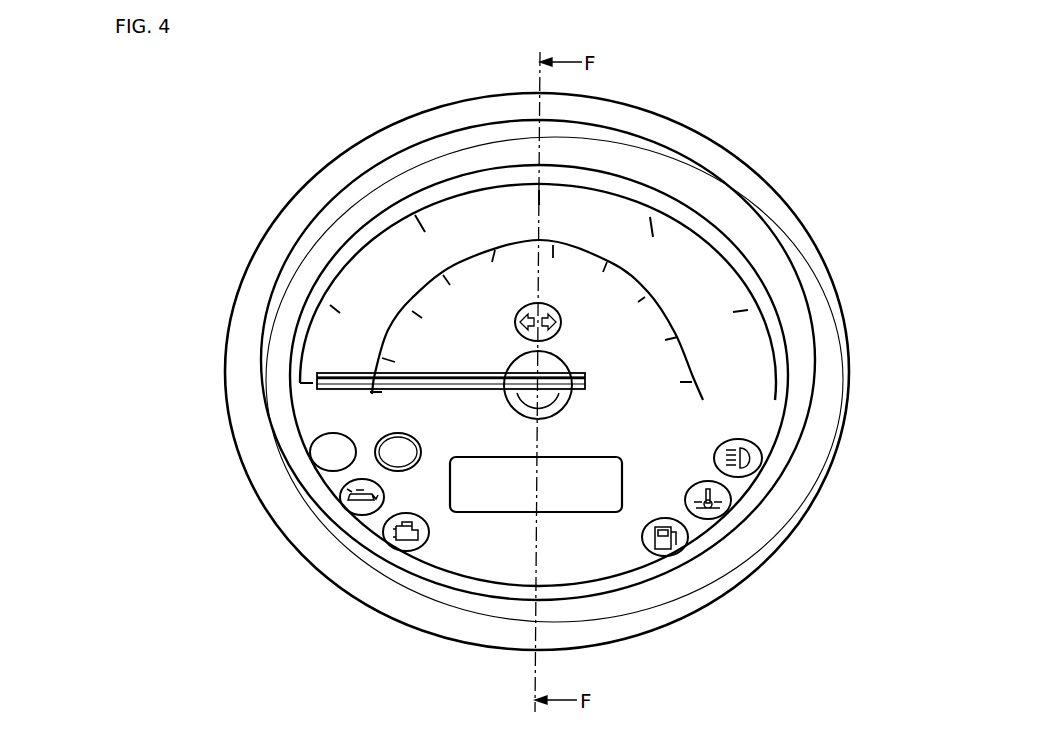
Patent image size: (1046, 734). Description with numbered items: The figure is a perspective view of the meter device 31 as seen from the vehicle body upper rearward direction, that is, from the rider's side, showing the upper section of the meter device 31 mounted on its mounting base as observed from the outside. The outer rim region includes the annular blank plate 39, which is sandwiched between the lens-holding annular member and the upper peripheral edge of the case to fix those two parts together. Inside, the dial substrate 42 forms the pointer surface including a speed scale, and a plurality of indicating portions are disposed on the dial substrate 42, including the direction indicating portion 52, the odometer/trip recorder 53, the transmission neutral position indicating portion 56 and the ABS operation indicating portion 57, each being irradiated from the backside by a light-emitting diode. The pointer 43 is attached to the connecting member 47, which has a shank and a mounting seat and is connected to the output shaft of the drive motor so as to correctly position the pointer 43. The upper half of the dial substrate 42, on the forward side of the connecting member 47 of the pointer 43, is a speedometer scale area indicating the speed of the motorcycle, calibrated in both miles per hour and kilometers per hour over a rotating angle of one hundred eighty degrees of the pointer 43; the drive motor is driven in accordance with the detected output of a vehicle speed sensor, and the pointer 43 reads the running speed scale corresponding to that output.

The meter device 31 is at (724, 131).
The annular blank plate 39 is at (760, 255).
The dial substrate 42 is at (755, 371).
The pointer 43 is at (345, 372).
The connecting member 47 is at (545, 398).
The direction indicating portion 52 is at (560, 326).
The odometer/trip recorder 53 is at (580, 498).
The transmission neutral position indicating portion 56 is at (330, 470).
The ABS operation indicating portion 57 is at (378, 440).